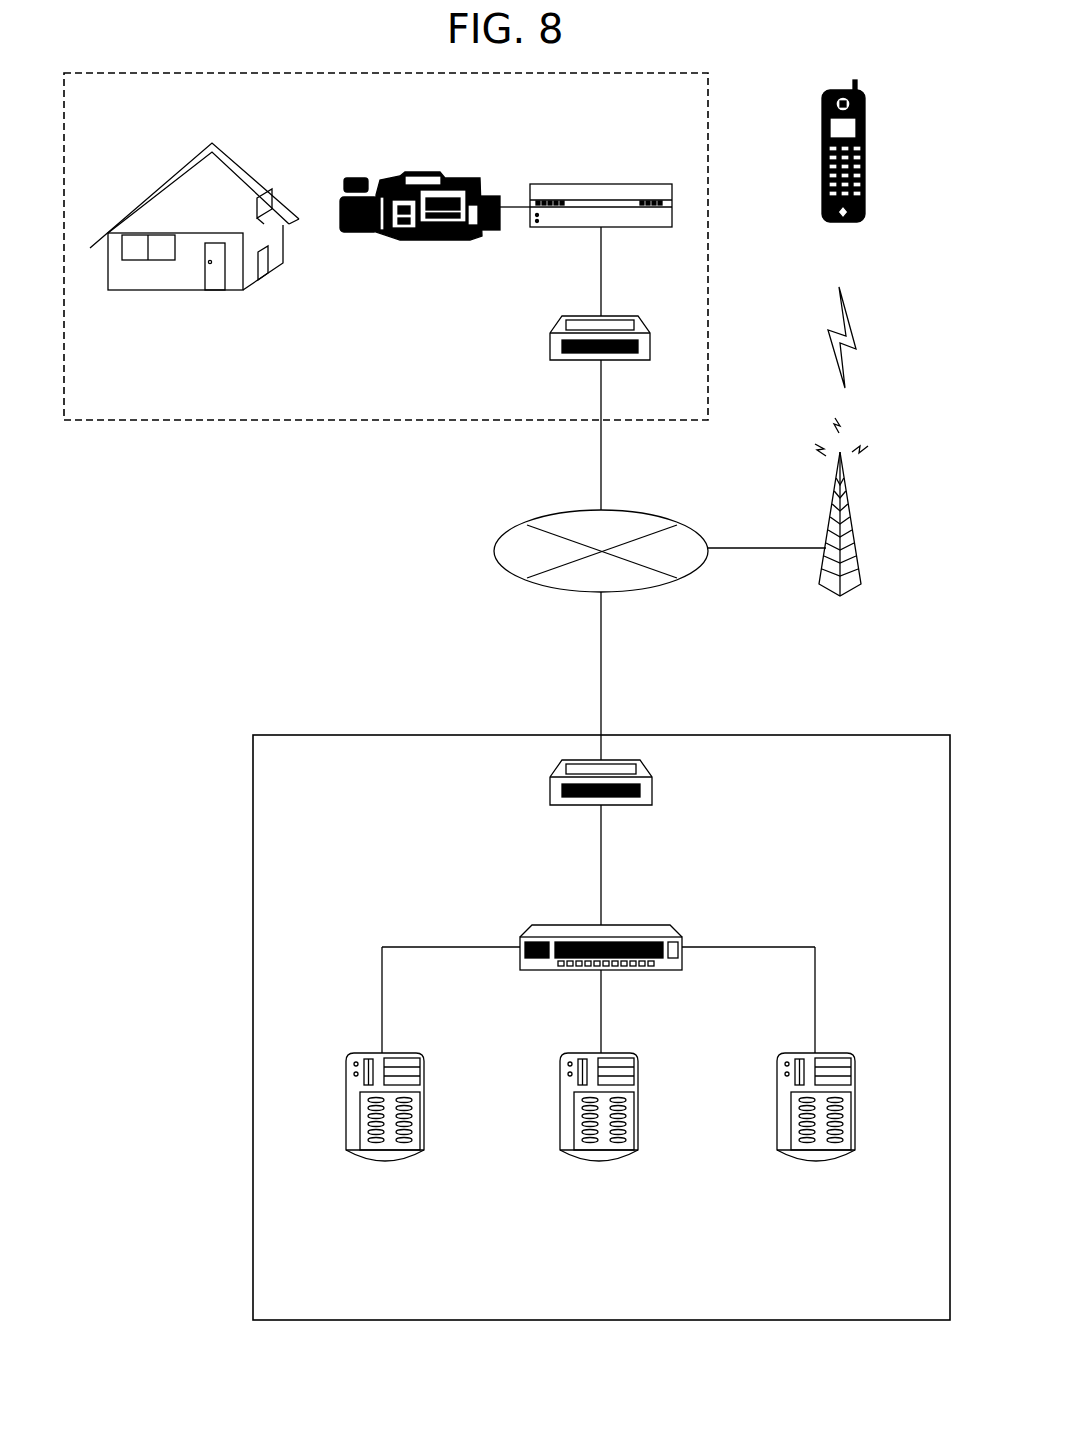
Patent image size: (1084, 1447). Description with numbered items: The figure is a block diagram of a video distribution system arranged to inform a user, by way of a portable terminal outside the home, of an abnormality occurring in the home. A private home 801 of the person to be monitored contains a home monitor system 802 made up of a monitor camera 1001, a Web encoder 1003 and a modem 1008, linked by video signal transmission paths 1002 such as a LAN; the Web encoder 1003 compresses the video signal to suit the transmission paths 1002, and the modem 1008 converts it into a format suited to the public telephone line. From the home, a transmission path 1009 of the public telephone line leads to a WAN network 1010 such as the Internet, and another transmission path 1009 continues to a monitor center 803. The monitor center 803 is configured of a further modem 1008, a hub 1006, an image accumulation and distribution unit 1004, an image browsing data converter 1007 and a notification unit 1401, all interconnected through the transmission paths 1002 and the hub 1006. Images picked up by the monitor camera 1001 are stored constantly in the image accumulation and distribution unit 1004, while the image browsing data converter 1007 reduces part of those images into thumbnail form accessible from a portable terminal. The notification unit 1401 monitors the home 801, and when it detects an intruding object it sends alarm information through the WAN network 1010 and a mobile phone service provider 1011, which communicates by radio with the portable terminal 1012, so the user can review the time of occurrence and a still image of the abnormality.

The private home 801 is at (153, 192).
The home monitor system 802 is at (254, 420).
The monitor center 803 is at (418, 1321).
The monitor camera 1001 is at (414, 240).
The video signal transmission path 1002 is at (518, 208).
The Web encoder 1003 is at (636, 228).
The image accumulation and distribution unit 1004 is at (560, 1105).
The hub 1006 is at (555, 925).
The image browsing data converter 1007 is at (346, 1104).
The modem 1008 is at (550, 347).
The transmission path of the public telephone line 1009 is at (600, 465).
The WAN network 1010 is at (494, 550).
The mobile phone service provider 1011 is at (852, 516).
The portable terminal 1012 is at (866, 162).
The notification unit 1401 is at (777, 1105).